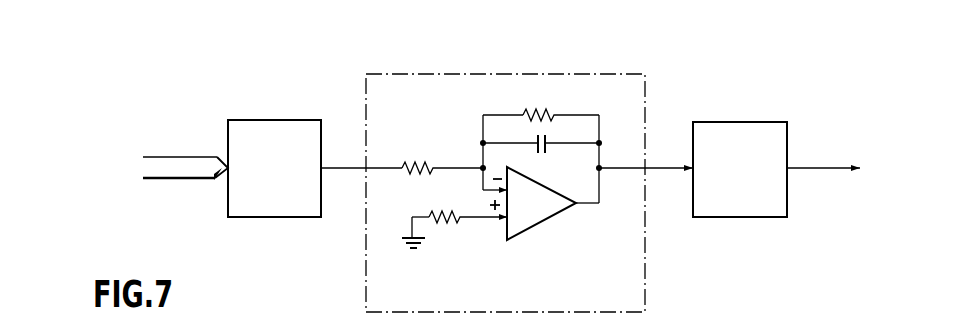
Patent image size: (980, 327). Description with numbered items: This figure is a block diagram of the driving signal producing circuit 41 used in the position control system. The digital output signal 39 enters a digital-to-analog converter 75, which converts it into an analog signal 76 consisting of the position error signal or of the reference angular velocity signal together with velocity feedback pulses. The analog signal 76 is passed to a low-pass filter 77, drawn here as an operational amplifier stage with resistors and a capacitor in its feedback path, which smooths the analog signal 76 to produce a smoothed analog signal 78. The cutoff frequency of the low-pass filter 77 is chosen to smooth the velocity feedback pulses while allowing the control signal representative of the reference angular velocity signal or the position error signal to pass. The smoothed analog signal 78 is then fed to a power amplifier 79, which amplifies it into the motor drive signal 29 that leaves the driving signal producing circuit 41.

The digital output signal 39 is at (176, 152).
The digital-to-analog converter 75 is at (310, 118).
The analog signal 76 is at (354, 163).
The low-pass filter 77 is at (647, 90).
The smoothed analog signal 78 is at (655, 165).
The power amplifier 79 is at (787, 216).
The motor drive signal 29 is at (810, 167).
The driving signal producing circuit 41 is at (697, 281).